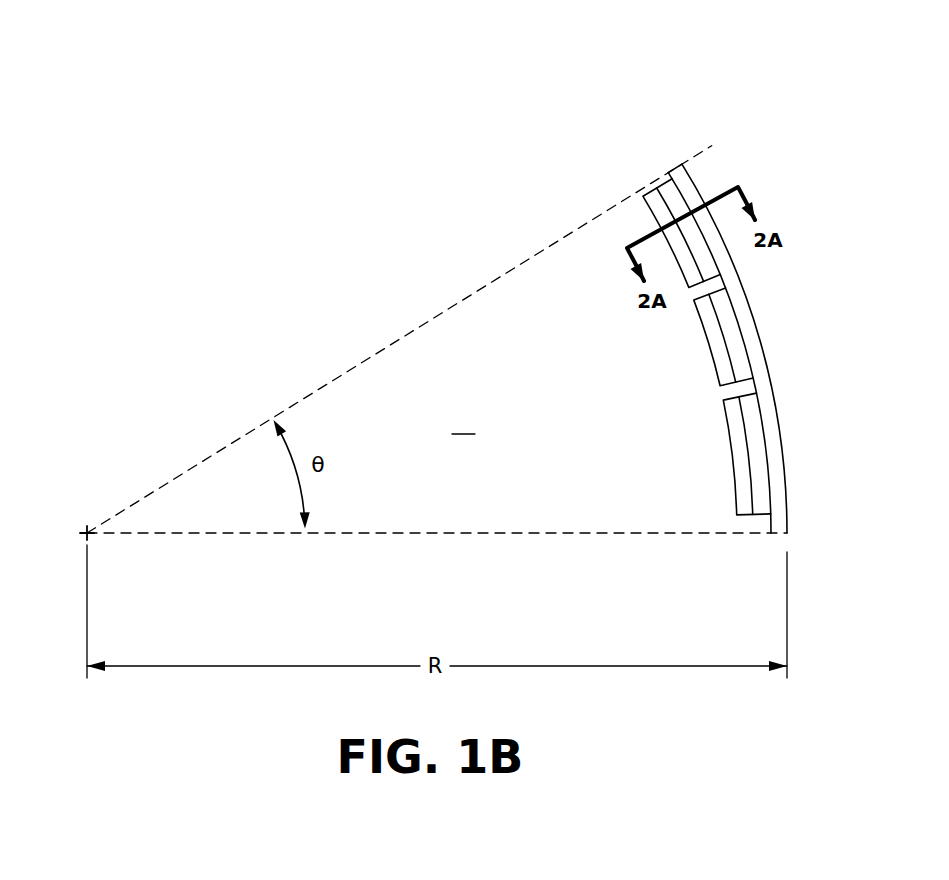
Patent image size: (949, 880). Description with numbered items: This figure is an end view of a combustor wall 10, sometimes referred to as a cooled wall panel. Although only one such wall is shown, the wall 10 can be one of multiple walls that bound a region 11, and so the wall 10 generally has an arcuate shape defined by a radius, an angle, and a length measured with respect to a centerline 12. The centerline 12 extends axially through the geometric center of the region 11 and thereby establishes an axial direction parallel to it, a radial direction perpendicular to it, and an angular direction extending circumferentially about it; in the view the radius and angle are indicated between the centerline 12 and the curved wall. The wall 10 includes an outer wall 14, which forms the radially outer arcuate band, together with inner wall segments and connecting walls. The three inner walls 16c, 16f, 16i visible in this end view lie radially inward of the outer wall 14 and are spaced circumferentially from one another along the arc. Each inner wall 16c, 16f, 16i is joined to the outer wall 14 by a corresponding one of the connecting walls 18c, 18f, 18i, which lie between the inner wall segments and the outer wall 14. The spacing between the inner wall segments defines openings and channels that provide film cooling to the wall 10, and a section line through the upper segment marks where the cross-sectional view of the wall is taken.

The wall 10 is at (806, 136).
The region 11 is at (463, 423).
The centerline 12 is at (90, 531).
The outer wall 14 is at (749, 329).
The inner wall 16c is at (653, 204).
The inner wall 16f is at (715, 342).
The inner wall 16i is at (737, 457).
The connecting wall 18c is at (675, 206).
The connecting wall 18f is at (742, 371).
The connecting wall 18i is at (759, 449).